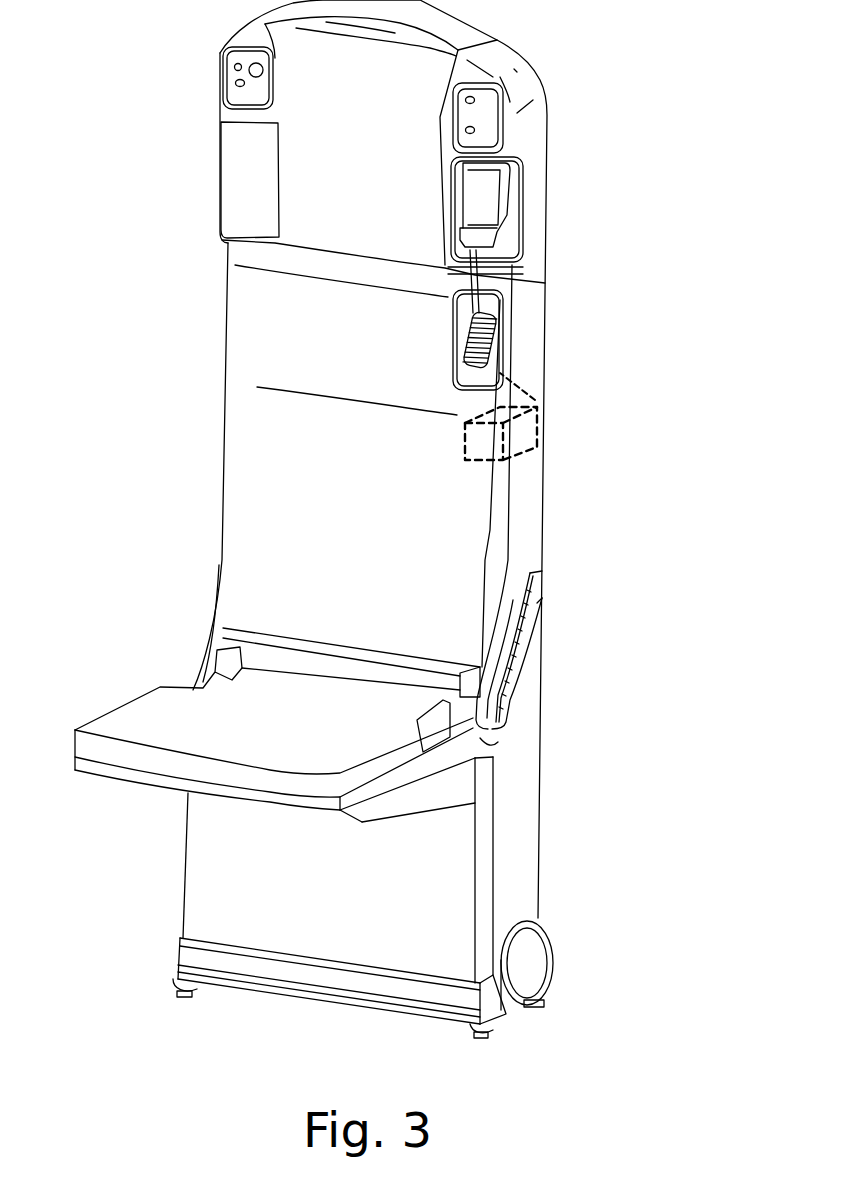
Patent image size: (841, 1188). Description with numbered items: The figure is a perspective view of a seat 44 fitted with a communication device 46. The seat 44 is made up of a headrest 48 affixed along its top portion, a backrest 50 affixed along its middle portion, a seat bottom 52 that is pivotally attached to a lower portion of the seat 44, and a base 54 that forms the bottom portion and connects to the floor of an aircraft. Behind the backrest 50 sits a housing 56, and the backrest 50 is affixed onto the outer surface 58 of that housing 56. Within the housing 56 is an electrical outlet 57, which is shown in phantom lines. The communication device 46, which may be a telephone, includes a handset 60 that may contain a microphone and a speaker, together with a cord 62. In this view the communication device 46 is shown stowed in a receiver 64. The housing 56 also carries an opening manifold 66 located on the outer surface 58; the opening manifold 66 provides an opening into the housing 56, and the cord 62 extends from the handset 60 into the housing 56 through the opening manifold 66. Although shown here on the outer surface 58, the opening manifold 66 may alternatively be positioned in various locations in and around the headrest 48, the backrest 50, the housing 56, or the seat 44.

The seat 44 is at (139, 482).
The communication device 46 is at (577, 233).
The headrest 48 is at (207, 137).
The backrest 50 is at (258, 425).
The seat bottom 52 is at (135, 697).
The base 54 is at (570, 866).
The housing 56 is at (549, 490).
The electrical outlet 57 is at (538, 427).
The outer surface 58 is at (508, 346).
The handset 60 is at (507, 213).
The cord 62 is at (536, 399).
The receiver 64 is at (524, 166).
The opening manifold 66 is at (512, 302).